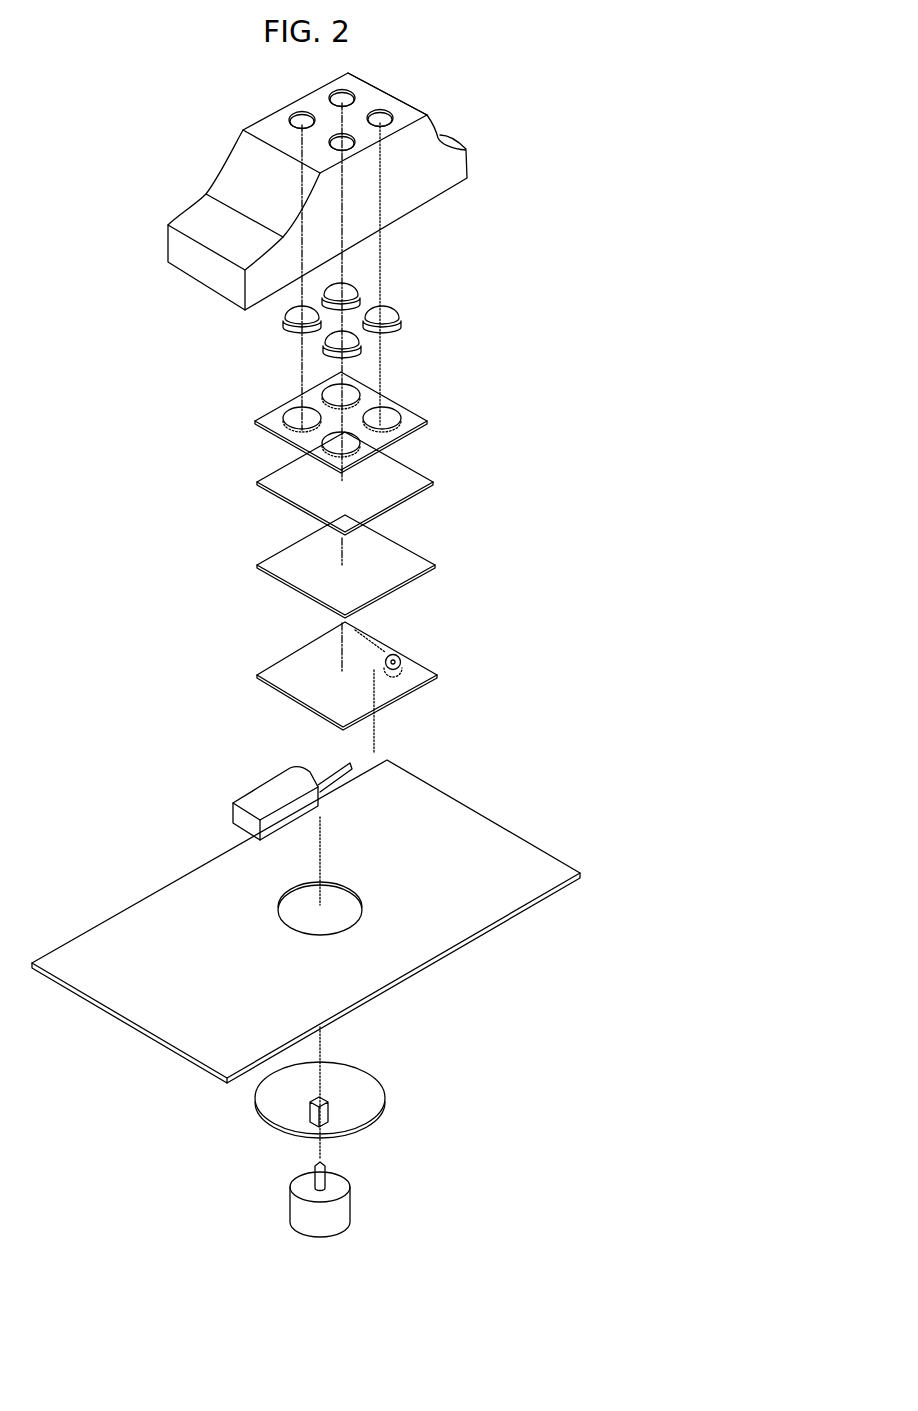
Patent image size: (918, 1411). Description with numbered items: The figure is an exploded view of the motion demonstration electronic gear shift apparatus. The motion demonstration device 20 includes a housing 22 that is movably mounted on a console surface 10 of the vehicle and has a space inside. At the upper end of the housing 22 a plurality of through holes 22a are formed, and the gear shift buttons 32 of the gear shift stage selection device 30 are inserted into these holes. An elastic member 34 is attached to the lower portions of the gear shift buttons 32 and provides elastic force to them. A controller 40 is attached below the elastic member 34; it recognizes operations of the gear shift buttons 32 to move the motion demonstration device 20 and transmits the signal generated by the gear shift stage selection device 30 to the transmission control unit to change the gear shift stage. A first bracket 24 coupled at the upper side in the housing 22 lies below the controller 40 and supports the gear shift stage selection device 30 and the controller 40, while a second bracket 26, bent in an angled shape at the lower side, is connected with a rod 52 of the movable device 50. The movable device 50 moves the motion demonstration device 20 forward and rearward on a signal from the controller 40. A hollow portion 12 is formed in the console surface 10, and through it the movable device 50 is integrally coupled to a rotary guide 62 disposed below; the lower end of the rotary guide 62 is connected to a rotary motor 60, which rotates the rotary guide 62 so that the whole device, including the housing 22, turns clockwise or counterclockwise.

The console surface 10 is at (306, 921).
The hollow portion 12 is at (361, 942).
The motion demonstration device 20 is at (525, 98).
The housing 22 is at (349, 271).
The through holes 22a is at (410, 120).
The first bracket 24 is at (391, 566).
The second bracket 26 is at (391, 682).
The gear shift stage selection device 30 is at (172, 337).
The gear shift buttons 32 is at (288, 320).
The elastic member 34 is at (301, 422).
The controller 40 is at (304, 483).
The movable device 50 is at (252, 779).
The rod 52 is at (281, 755).
The rotary motor 60 is at (371, 1199).
The rotary guide 62 is at (360, 1093).